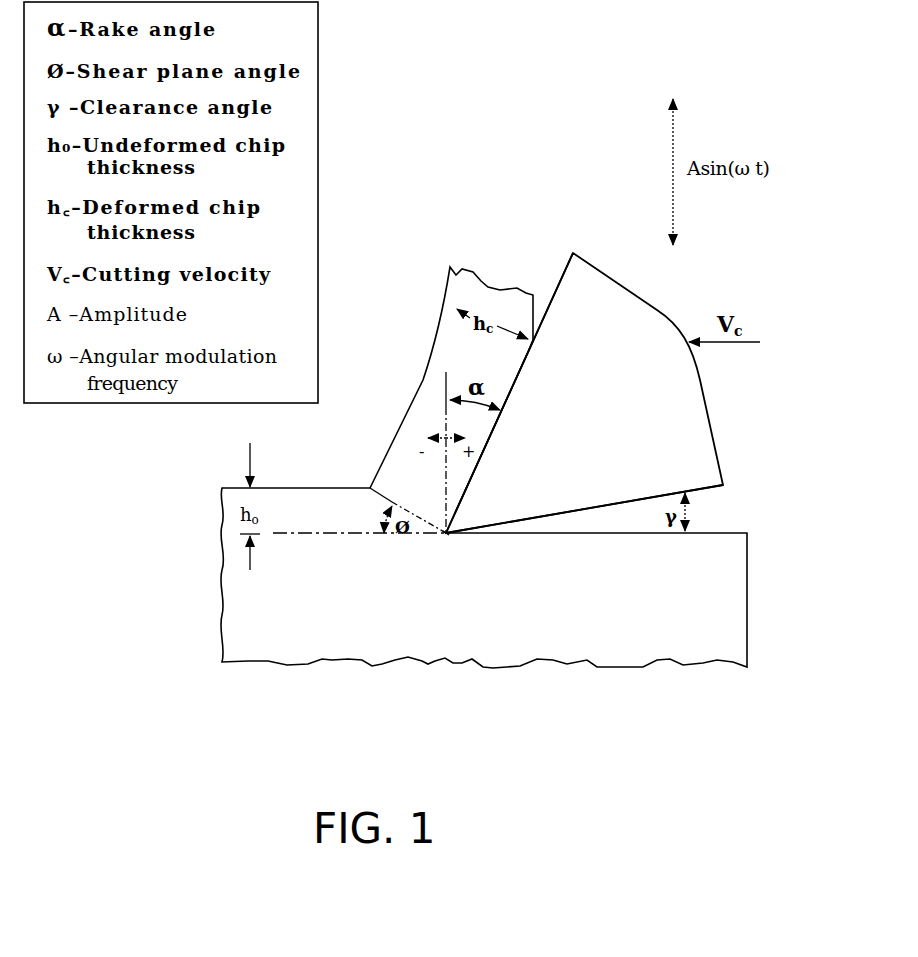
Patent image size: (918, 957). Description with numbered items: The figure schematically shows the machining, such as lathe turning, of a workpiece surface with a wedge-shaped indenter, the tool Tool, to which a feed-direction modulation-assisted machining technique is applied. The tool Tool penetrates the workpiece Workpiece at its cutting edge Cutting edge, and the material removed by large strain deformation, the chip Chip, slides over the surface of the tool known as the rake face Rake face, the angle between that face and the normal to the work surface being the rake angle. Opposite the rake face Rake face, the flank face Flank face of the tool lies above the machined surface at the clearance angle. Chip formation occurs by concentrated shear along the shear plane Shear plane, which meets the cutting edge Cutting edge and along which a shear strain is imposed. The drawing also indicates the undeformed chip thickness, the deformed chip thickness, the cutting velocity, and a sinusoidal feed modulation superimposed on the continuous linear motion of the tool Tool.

The tool Tool is at (584, 393).
The workpiece Workpiece is at (484, 578).
The chip Chip is at (434, 340).
The shear plane Shear plane is at (372, 498).
The rake face Rake face is at (560, 277).
The flank face Flank face is at (709, 491).
The cutting edge Cutting edge is at (452, 539).